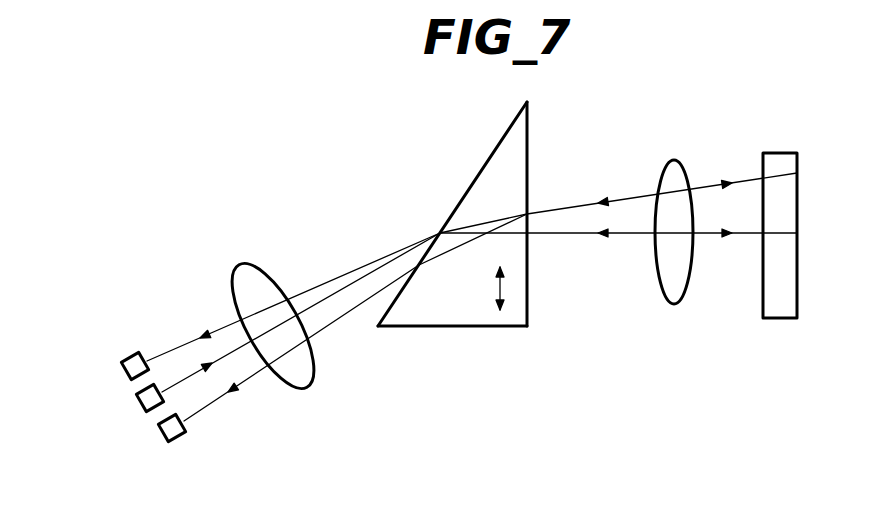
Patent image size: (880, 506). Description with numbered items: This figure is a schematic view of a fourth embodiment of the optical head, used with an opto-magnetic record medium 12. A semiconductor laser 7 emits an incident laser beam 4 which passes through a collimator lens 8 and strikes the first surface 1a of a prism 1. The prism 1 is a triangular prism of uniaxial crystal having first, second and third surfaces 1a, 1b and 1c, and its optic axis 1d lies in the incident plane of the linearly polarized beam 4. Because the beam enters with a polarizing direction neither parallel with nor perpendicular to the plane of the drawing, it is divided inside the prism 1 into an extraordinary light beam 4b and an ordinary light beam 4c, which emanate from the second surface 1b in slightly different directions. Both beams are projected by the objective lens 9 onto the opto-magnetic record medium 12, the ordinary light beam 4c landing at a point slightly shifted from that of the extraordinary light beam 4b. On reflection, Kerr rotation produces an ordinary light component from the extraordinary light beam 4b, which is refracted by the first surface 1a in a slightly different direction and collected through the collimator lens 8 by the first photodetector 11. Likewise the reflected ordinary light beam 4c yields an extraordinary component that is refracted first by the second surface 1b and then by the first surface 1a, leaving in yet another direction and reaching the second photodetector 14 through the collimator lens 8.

The prism 1 is at (481, 248).
The first surface 1a is at (487, 158).
The second surface 1b is at (530, 152).
The third surface 1c is at (437, 328).
The optic axis 1d is at (503, 288).
The incident light beam 4 is at (330, 286).
The extraordinary light beam 4b is at (634, 240).
The ordinary light beam 4c is at (627, 198).
The semiconductor laser 7 is at (137, 402).
The collimator lens 8 is at (238, 265).
The objective lens 9 is at (673, 160).
The first photodetector 11 is at (133, 354).
The opto-magnetic record medium 12 is at (785, 318).
The second photodetector 14 is at (178, 440).